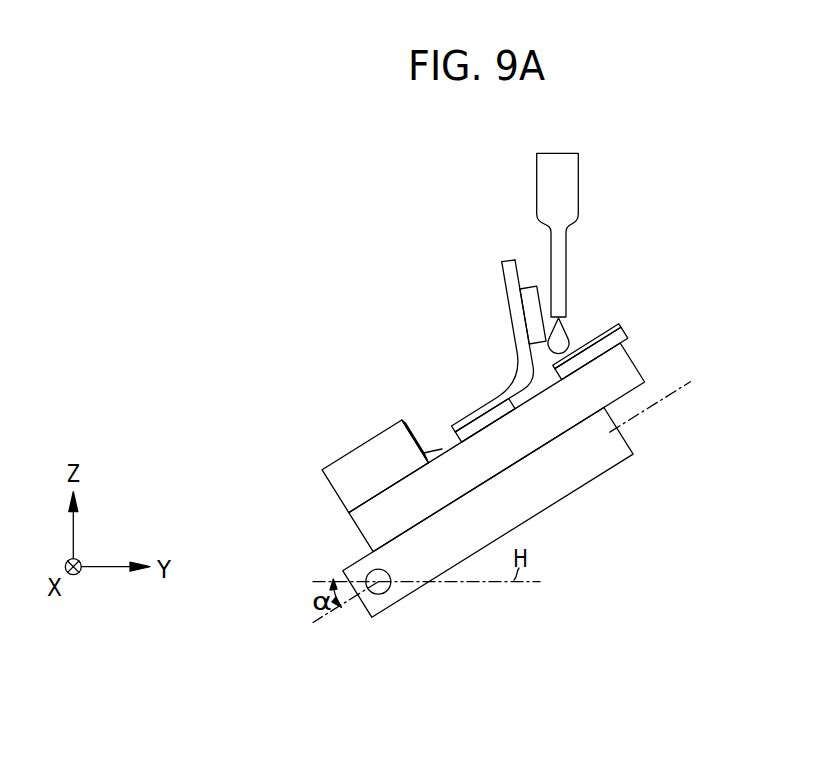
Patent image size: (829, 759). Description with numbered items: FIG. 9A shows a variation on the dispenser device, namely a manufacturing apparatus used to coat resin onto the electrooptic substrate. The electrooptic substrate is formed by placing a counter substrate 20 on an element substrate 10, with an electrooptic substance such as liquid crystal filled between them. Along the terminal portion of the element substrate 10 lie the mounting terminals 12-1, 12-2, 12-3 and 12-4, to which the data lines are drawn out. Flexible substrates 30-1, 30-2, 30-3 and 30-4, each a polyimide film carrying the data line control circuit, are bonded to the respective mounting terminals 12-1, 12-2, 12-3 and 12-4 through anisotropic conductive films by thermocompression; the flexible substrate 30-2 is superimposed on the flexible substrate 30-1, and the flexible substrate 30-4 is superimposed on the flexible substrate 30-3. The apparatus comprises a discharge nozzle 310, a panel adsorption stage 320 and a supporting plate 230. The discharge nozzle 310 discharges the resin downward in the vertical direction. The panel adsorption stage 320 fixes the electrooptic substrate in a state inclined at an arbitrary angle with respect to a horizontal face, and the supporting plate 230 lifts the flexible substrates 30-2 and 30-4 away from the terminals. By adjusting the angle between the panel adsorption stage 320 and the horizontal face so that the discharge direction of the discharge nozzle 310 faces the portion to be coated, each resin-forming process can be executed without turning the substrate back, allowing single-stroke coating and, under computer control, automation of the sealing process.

The element substrate 10 is at (636, 367).
The counter substrate 20 is at (353, 456).
The mounting terminal 12-1 is at (625, 334).
The mounting terminal 12-2 is at (460, 441).
The mounting terminal 12-3 is at (655, 352).
The mounting terminal 12-4 is at (391, 399).
The flexible substrate 30-1 is at (593, 340).
The flexible substrate 30-2 is at (514, 337).
The flexible substrate 30-3 is at (635, 327).
The flexible substrate 30-4 is at (449, 346).
The supporting plate 230 is at (524, 288).
The discharge nozzle 310 is at (578, 180).
The panel adsorption stage 320 is at (626, 442).